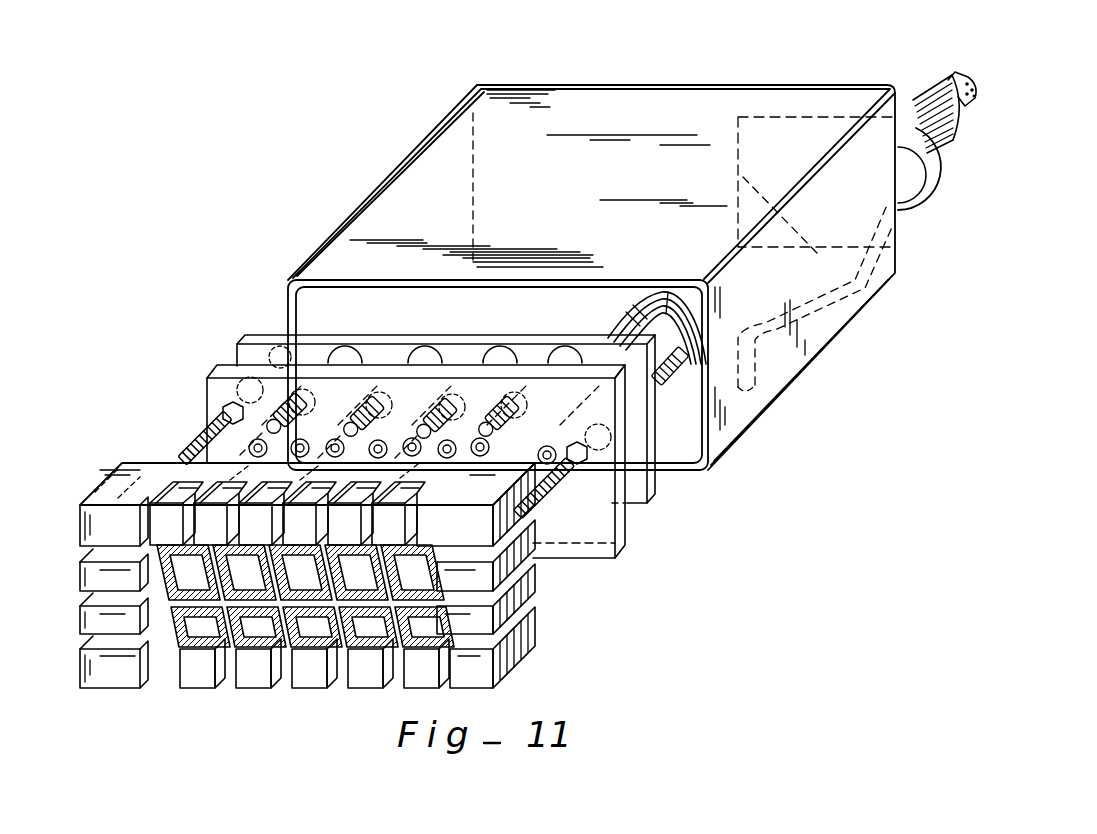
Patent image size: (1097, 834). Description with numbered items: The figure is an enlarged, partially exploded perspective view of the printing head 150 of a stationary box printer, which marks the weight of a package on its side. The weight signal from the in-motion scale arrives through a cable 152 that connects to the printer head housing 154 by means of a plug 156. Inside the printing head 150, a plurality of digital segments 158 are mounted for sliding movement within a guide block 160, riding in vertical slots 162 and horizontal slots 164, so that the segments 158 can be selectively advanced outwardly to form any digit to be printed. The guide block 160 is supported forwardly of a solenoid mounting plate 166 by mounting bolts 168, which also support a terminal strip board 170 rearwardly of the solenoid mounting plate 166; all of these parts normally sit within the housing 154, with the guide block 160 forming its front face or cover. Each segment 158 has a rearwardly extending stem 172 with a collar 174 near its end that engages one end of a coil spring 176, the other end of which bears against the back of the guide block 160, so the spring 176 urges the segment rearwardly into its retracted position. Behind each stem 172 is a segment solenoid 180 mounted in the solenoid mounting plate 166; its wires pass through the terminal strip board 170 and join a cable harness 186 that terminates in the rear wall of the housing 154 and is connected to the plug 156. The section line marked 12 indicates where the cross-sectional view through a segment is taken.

The printing head 150 is at (344, 213).
The cable 152 is at (950, 84).
The printer head housing 154 is at (652, 97).
The plug 156 is at (930, 160).
The digital segments 158 is at (401, 548).
The guide block 160 is at (530, 583).
The vertical slots 162 is at (156, 497).
The horizontal slots 164 is at (510, 585).
The solenoid mounting plate 166 is at (626, 530).
The mounting bolts 168 is at (198, 497).
The terminal strip board 170 is at (649, 478).
The stem 172 is at (224, 444).
The collar 174 is at (268, 434).
The coil spring 176 is at (200, 442).
The segment solenoid 180 is at (427, 350).
The cable harness 186 is at (640, 300).
The section line for FIG. 12 is at (558, 295).